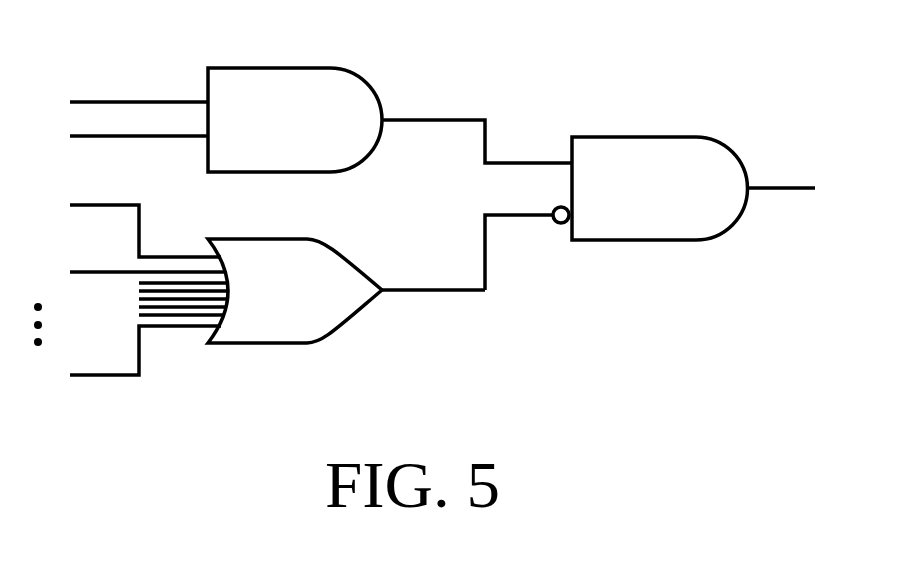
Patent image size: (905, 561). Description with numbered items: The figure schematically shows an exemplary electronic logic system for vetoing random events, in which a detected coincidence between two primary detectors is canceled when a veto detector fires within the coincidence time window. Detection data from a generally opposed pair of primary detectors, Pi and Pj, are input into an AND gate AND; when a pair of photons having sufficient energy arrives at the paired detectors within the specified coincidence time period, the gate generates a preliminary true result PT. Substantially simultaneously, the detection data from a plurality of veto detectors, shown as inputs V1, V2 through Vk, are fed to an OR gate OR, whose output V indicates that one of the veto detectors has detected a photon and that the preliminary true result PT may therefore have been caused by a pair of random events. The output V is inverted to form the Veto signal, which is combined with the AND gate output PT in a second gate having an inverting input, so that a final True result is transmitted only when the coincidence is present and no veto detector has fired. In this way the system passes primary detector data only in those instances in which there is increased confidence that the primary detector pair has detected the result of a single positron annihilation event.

The primary detector detection data Pi is at (120, 95).
The primary detector detection data Pj is at (120, 138).
The AND gate AND is at (295, 102).
The preliminary true result PT is at (477, 115).
The true result True is at (702, 188).
The veto signal Veto is at (526, 234).
The OR gate OR is at (295, 272).
The veto array output V is at (433, 312).
The veto detector detection data V1 is at (125, 222).
The veto detector detection data V2 is at (129, 284).
The veto detector detection data Vk is at (125, 362).